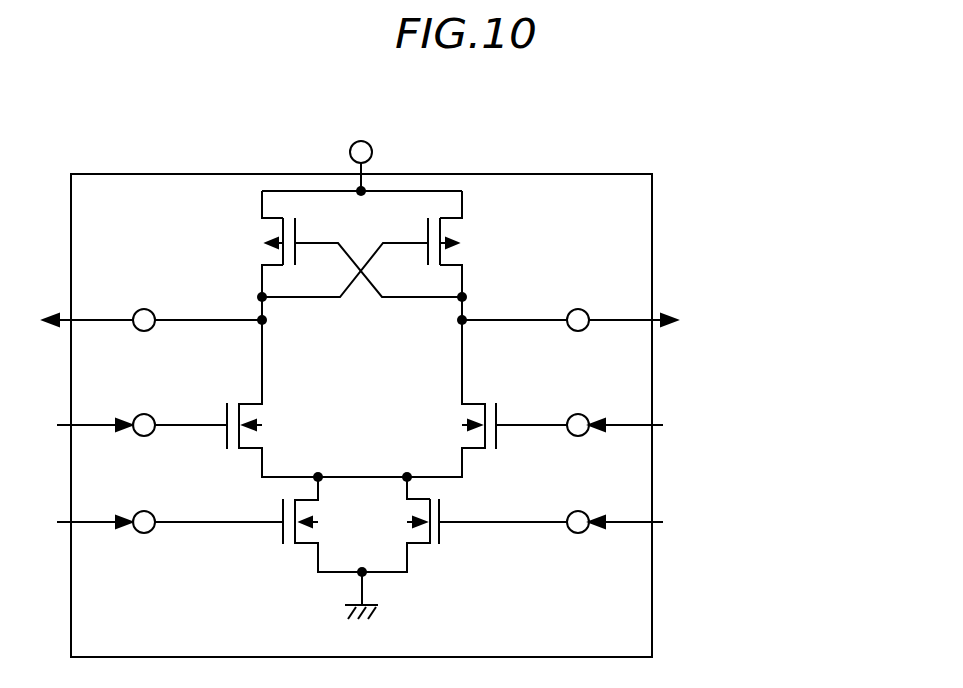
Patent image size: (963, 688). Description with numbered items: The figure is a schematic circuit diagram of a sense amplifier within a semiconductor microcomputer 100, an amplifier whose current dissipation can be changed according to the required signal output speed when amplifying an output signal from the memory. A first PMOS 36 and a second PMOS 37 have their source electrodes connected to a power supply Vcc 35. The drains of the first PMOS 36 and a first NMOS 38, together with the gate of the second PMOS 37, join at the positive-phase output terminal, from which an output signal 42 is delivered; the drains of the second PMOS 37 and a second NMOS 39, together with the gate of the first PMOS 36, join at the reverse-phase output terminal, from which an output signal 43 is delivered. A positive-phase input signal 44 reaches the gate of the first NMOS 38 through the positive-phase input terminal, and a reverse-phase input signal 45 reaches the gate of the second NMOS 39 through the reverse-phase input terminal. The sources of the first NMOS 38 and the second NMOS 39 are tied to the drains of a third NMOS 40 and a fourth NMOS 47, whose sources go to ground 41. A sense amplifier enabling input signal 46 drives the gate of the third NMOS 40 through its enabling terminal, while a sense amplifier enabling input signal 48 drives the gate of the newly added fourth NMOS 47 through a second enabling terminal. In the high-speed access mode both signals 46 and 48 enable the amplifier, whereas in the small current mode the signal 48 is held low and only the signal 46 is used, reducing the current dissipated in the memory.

The semiconductor microcomputer 100 is at (225, 143).
The power supply Vcc 35 is at (401, 166).
The first PMOS 36 is at (256, 241).
The second PMOS 37 is at (465, 241).
The first NMOS 38 is at (265, 426).
The second NMOS 39 is at (459, 426).
The third NMOS 40 is at (298, 538).
The ground 41 is at (369, 612).
The output signal 42 is at (152, 311).
The output signal 43 is at (621, 319).
The positive-phase input signal 44 is at (142, 417).
The reverse-phase input signal 45 is at (633, 425).
The sense amplifier enabling input signal 46 is at (170, 513).
The fourth NMOS 47 is at (425, 538).
The sense amplifier enabling input signal 48 is at (659, 522).